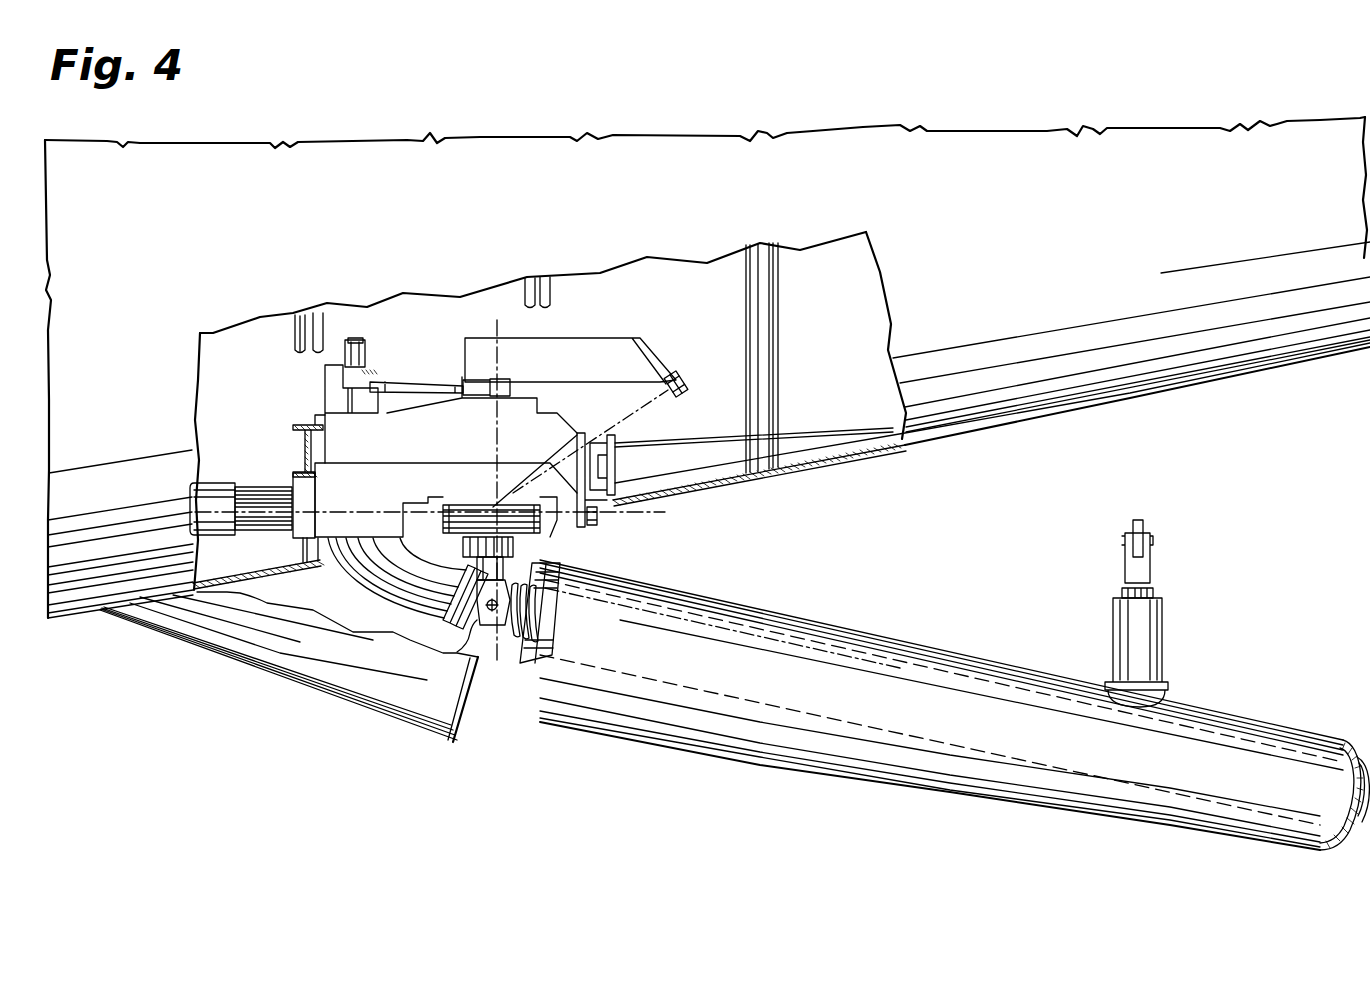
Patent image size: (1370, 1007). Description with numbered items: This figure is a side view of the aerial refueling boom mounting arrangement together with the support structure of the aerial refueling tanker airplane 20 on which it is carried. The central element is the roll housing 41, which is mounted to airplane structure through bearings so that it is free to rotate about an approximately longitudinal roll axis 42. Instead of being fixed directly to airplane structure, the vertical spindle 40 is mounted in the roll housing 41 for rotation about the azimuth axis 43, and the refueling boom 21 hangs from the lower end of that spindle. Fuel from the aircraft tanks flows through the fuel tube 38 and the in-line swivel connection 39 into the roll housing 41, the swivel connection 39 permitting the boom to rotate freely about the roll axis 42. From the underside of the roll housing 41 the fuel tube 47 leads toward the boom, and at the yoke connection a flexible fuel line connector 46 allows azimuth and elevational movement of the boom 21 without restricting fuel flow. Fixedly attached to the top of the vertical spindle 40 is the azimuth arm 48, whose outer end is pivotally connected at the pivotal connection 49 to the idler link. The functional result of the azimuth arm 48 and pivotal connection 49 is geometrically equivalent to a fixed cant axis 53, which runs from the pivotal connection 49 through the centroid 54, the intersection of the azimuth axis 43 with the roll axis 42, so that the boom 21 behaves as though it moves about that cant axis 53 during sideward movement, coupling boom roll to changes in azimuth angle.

The aerial refueling tanker airplane 20 is at (1181, 396).
The refueling boom 21 is at (746, 757).
The fuel tube 38 is at (260, 486).
The in-line swivel connection 39 is at (210, 483).
The vertical spindle 40 is at (513, 390).
The roll housing 41 is at (386, 498).
The longitudinal roll axis 42 is at (660, 514).
The azimuth axis 43 is at (497, 325).
The flexible fuel line connector 46 is at (488, 655).
The fuel tube 47 is at (395, 577).
The azimuth arm 48 is at (597, 339).
The pivotal connection 49 is at (670, 370).
The fixed cant axis 53 is at (684, 368).
The centroid 54 is at (495, 523).